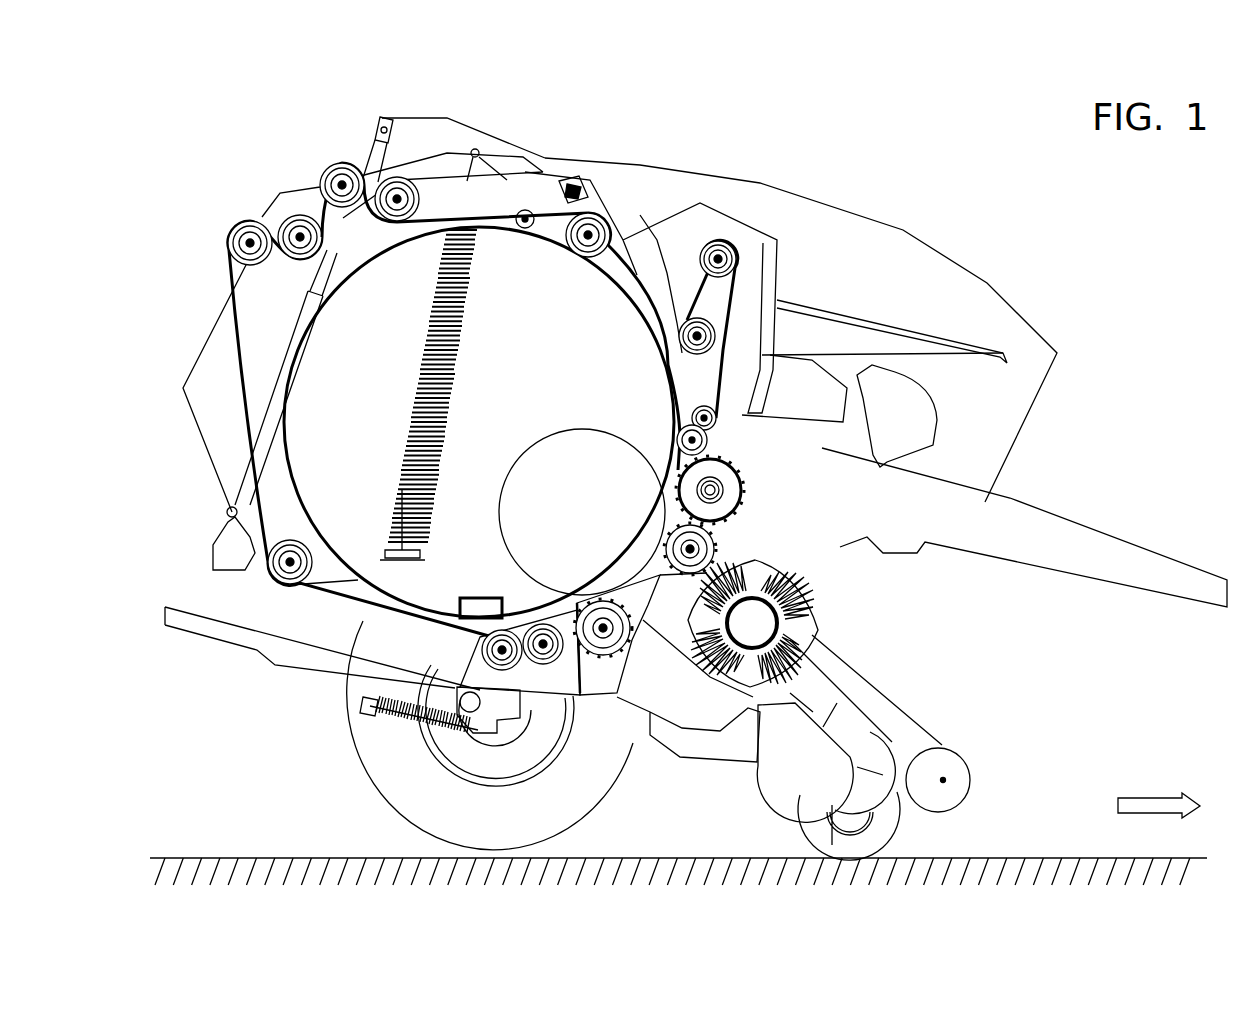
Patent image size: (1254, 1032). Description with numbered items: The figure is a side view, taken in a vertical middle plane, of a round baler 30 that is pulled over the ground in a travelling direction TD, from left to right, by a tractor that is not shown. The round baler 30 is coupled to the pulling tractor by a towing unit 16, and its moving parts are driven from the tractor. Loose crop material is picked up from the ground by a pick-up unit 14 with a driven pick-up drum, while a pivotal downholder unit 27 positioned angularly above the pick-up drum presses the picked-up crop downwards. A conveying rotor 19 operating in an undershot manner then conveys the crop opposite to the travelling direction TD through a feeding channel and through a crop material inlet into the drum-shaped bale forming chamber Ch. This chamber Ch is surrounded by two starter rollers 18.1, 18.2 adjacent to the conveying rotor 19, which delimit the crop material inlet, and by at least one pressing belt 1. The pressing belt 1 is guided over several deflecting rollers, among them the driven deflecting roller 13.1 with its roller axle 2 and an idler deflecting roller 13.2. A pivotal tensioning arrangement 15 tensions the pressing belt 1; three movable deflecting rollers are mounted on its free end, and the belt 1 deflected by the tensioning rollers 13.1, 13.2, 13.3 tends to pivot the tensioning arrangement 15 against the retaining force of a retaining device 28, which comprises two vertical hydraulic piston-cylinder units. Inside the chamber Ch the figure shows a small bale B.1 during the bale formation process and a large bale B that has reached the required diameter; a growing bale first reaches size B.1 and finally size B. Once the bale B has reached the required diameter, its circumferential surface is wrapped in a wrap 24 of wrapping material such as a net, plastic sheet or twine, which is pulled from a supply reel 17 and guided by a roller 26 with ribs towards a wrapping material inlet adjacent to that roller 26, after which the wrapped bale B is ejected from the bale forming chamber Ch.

The pressing belt 1 is at (632, 256).
The roller axle 2 is at (725, 250).
The driven deflecting roller 13.1 is at (745, 263).
The idler deflecting roller 13.2 is at (218, 243).
The tensioning roller 13.3 is at (286, 214).
The pick-up unit 14 is at (862, 733).
The tensioning arrangement 15 is at (447, 195).
The towing unit 16 is at (1050, 547).
The supply reel 17 is at (930, 400).
The starter roller 18.1 is at (613, 638).
The starter roller 18.2 is at (700, 547).
The conveying rotor 19 is at (825, 690).
The wrap of wrapping material 24 is at (822, 357).
The roller with ribs 26 is at (725, 483).
The downholder unit 27 is at (944, 781).
The retaining device 28 is at (243, 483).
The round baler 30 is at (909, 203).
The large bale B is at (501, 435).
The small bale B.1 is at (569, 563).
The bale forming chamber Ch is at (495, 303).
The travelling direction TD is at (1148, 793).